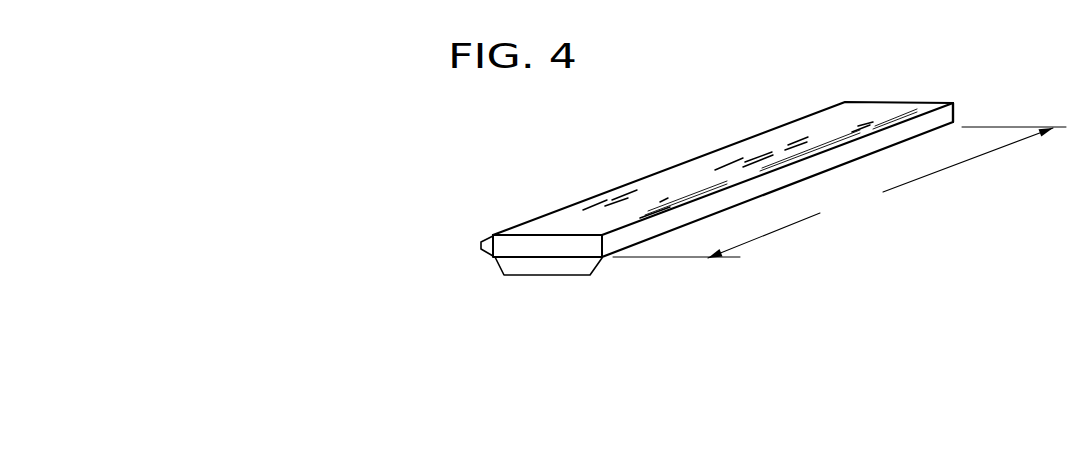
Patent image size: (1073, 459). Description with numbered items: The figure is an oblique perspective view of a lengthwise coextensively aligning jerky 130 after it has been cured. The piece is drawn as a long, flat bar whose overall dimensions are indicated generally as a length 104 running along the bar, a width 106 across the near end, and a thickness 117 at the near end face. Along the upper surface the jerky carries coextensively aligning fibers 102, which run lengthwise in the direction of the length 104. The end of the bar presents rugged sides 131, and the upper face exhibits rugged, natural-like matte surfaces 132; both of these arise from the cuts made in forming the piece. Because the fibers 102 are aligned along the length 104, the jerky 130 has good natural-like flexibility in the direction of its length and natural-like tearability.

The lengthwise coextensively aligning jerky 130 is at (588, 190).
The coextensively aligning fibers 102 is at (790, 143).
The rugged, natural-like matte surfaces 132 is at (883, 115).
The rugged sides 131 is at (945, 117).
The length 104 is at (839, 192).
The thickness 117 is at (481, 245).
The width 106 is at (550, 276).